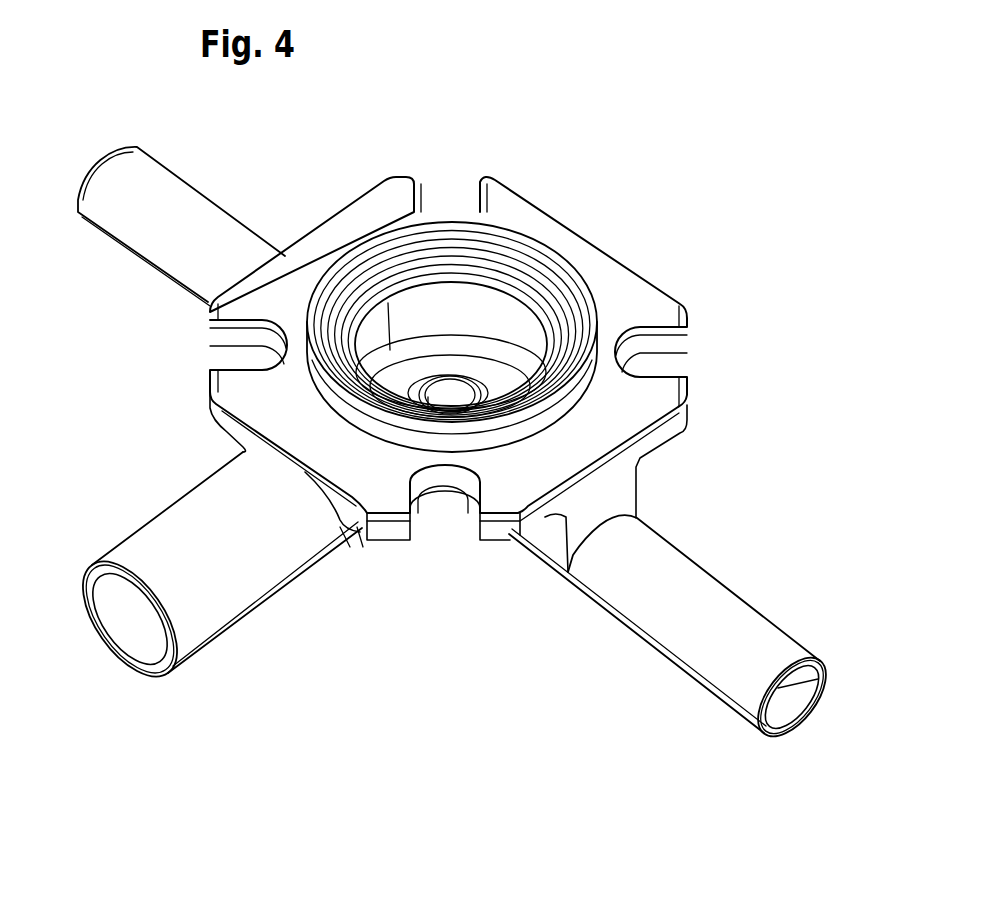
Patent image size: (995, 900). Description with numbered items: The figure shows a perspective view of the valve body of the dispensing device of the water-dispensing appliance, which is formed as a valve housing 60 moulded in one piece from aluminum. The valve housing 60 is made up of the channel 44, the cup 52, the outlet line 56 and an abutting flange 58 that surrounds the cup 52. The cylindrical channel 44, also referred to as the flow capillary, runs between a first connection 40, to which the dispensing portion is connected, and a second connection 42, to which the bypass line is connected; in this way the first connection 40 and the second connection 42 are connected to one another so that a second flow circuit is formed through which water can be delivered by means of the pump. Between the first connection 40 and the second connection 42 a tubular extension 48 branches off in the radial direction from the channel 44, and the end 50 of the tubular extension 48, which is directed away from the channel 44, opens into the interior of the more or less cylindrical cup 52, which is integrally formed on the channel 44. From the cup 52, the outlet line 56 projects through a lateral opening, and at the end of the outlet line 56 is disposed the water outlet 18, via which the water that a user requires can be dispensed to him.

The water outlet 18 is at (188, 672).
The first connection 40 is at (829, 659).
The second connection 42 is at (94, 235).
The channel 44 is at (615, 612).
The tubular extension 48 is at (447, 390).
The end of the tubular extension 50 is at (473, 382).
The cup 52 is at (382, 343).
The outlet line 56 is at (258, 600).
The abutting flange 58 is at (512, 215).
The valve housing 60 is at (695, 407).